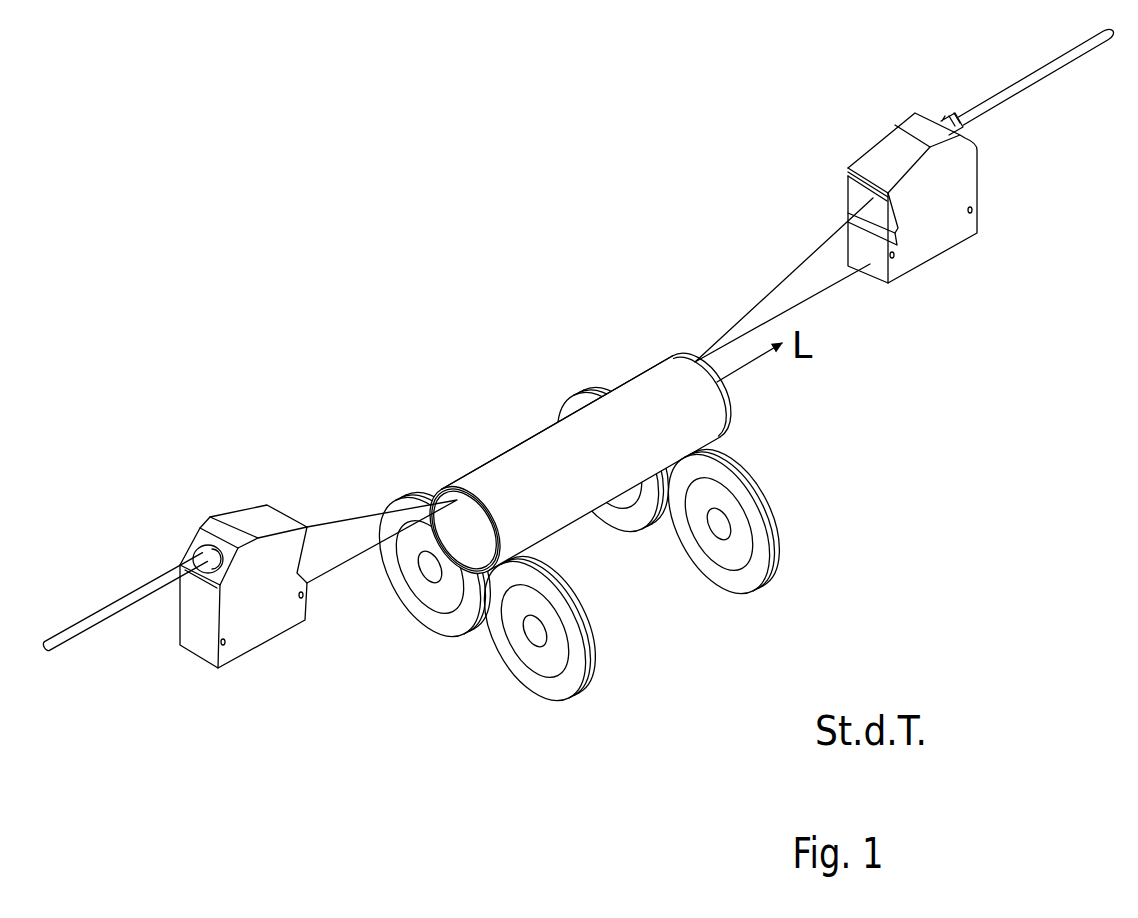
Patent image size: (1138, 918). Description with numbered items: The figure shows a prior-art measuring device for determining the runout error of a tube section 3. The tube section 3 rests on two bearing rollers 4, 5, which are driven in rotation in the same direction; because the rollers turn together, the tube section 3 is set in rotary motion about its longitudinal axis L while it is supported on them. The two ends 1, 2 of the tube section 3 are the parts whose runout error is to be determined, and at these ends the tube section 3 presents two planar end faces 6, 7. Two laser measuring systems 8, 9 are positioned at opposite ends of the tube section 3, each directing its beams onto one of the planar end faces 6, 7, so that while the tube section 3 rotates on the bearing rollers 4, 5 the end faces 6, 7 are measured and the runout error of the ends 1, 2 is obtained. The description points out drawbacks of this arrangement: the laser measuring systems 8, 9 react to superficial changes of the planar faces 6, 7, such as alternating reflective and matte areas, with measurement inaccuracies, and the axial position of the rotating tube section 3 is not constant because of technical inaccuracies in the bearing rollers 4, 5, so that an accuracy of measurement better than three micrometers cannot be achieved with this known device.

The first end 1 is at (430, 470).
The second end 2 is at (660, 340).
The tube section 3 is at (546, 447).
The first bearing roller 4 is at (453, 620).
The second bearing roller 5 is at (630, 517).
The first planar end face 6 is at (475, 516).
The second planar end face 7 is at (730, 408).
The first laser measuring system 8 is at (248, 514).
The second laser measuring system 9 is at (943, 222).